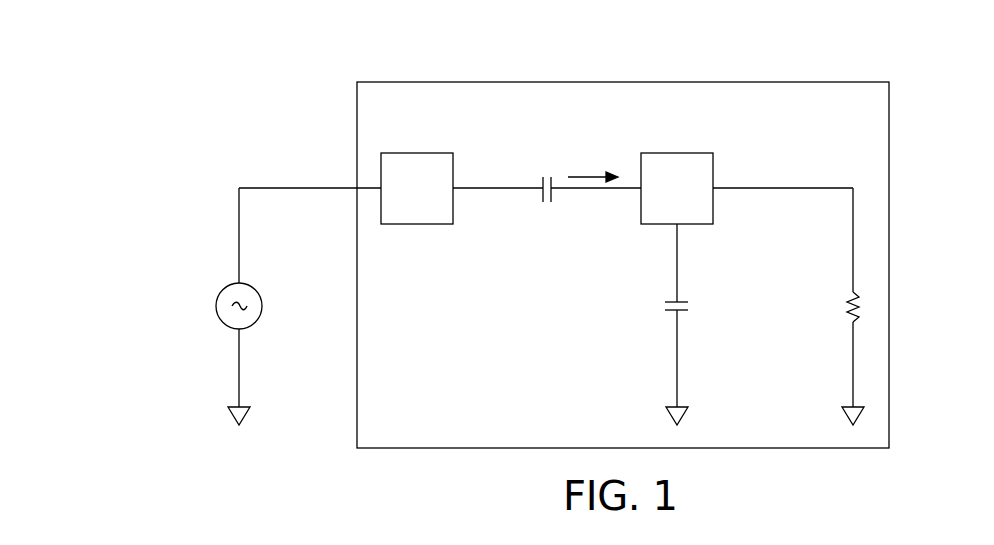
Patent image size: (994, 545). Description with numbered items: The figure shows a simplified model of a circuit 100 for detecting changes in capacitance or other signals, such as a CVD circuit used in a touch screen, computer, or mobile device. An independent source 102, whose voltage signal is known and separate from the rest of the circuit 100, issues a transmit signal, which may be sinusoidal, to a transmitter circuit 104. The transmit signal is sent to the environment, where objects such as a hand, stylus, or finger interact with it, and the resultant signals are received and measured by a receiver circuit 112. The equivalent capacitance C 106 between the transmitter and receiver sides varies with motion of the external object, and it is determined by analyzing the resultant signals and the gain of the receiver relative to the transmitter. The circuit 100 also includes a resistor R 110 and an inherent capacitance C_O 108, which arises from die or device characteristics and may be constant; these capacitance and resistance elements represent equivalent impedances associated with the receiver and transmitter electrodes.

The circuit 100 is at (737, 81).
The source 102 is at (215, 308).
The transmitter circuit 104 is at (417, 152).
The capacitance C 106 is at (546, 204).
The inherent capacitance C_O 108 is at (665, 305).
The resistor R 110 is at (848, 305).
The receiver circuit 112 is at (688, 152).